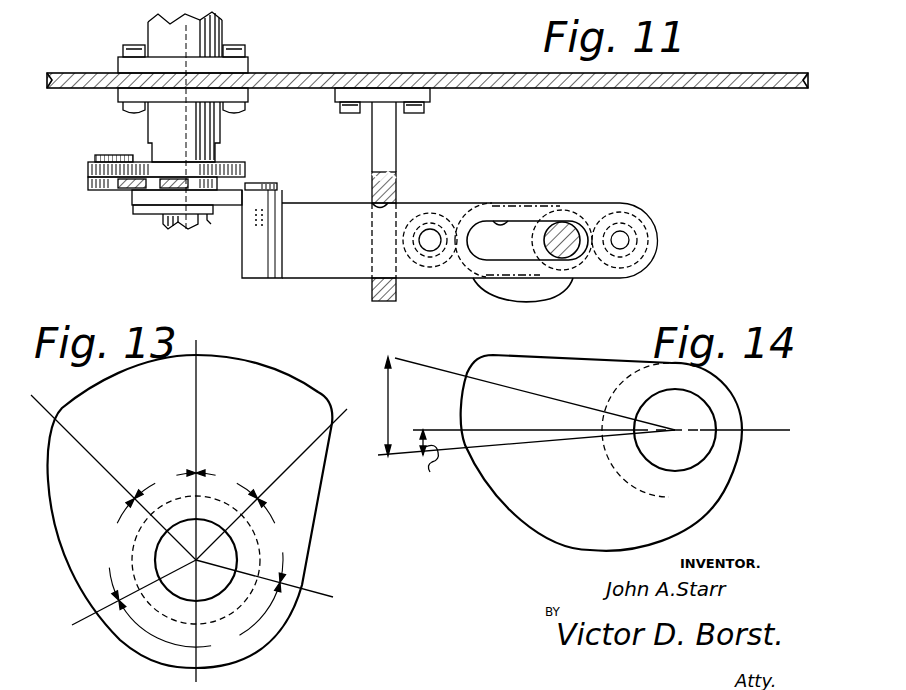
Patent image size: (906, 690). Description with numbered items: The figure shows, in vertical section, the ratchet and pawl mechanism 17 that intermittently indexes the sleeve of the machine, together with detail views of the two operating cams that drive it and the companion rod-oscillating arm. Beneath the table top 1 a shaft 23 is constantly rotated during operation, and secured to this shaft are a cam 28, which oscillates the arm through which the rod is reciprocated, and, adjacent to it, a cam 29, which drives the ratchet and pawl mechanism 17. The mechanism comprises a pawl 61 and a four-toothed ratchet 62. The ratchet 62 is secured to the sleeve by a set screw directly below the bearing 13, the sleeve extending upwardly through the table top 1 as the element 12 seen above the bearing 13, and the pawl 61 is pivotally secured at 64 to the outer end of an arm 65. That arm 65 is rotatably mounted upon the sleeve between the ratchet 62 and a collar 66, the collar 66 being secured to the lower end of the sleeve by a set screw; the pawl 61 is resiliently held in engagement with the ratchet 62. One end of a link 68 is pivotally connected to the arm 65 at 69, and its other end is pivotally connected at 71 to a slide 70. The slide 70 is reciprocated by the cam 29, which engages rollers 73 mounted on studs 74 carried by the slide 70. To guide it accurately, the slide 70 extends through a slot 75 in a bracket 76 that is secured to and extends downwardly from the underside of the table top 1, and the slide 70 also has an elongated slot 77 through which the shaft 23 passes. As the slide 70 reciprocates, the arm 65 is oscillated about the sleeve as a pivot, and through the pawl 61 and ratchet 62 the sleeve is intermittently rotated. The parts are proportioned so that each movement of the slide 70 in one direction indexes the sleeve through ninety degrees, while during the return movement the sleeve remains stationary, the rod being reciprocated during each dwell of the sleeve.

In FIG. 11, the table top 1 is at (397, 73).
In FIG. 11, the shaft 12 is at (220, 35).
In FIG. 11, the bearing 13 is at (218, 128).
In FIG. 11, the pawl 61 is at (163, 158).
In FIG. 11, the pivot 64 is at (105, 158).
In FIG. 11, the four-toothed ratchet 62 is at (247, 168).
In FIG. 11, the arm 65 is at (94, 191).
In FIG. 11, the pivotal connection 71 is at (278, 188).
In FIG. 11, the pivotal connection 69 is at (150, 212).
In FIG. 11, the link 68 is at (183, 220).
In FIG. 11, the collar 66 is at (207, 214).
In FIG. 11, the ratchet and pawl mechanism 17 is at (234, 252).
In FIG. 11, the slide 70 is at (320, 270).
In FIG. 11, the slot 75 is at (376, 203).
In FIG. 11, the bracket 76 is at (386, 146).
In FIG. 11, the studs 74 is at (430, 229).
In FIG. 11, the rollers 73 is at (462, 210).
In FIG. 11, the elongated slot 77 is at (500, 223).
In FIG. 11, the shaft 23 is at (568, 222).
In FIG. 11, the cam 29 is at (545, 290).
In FIG. 14, the cam 29 is at (530, 518).
In FIG. 13, the cam 28 is at (280, 387).